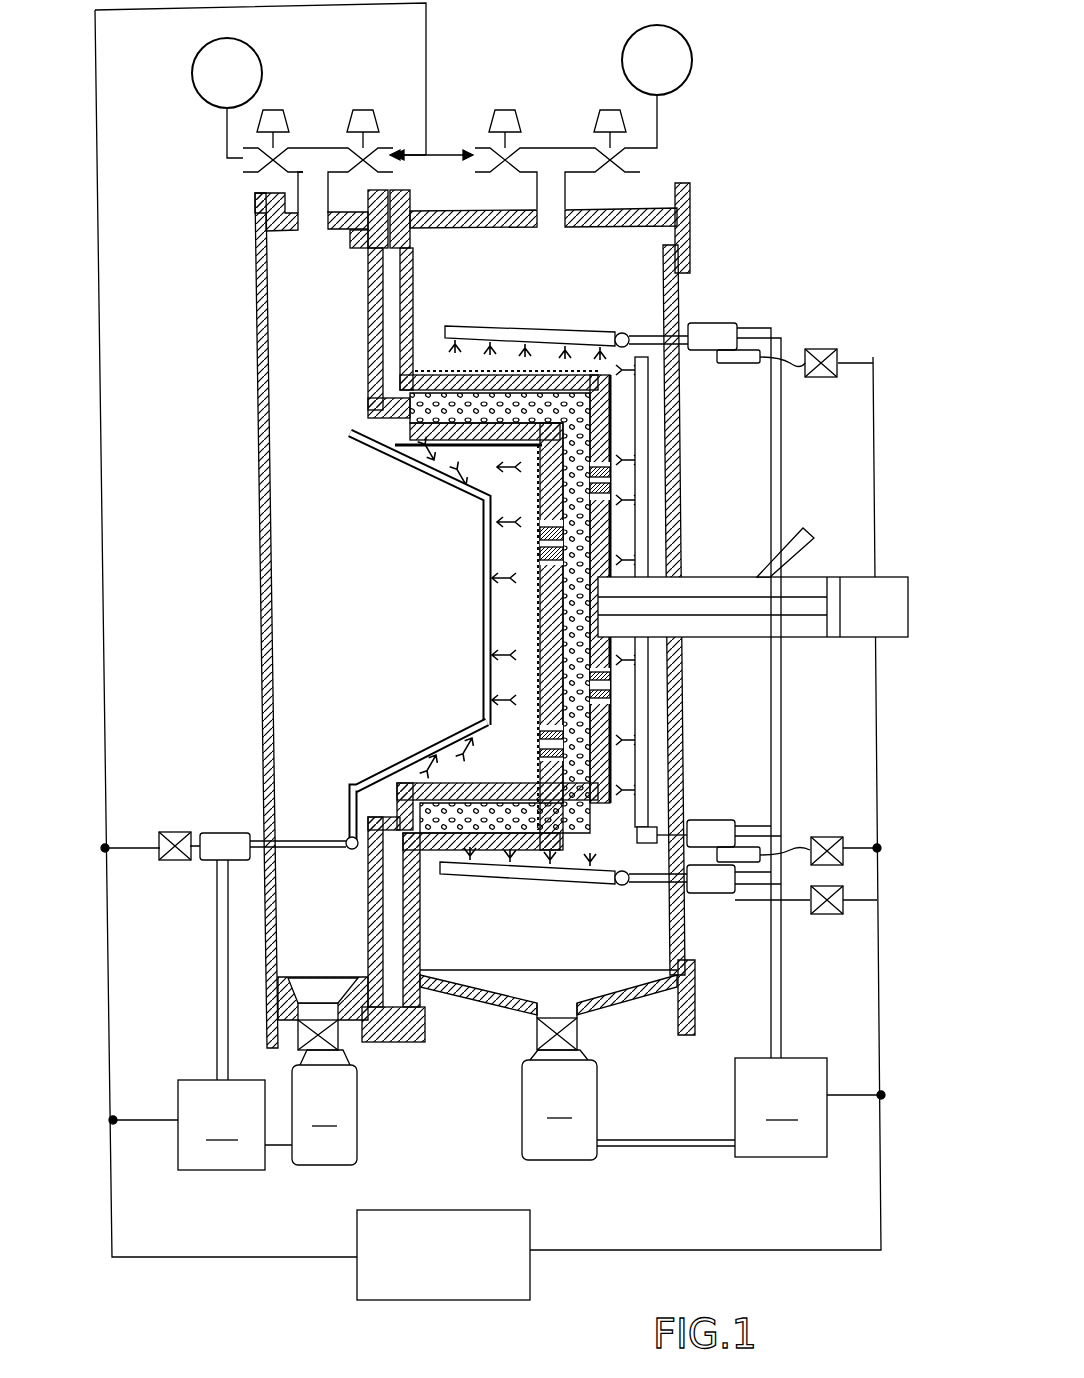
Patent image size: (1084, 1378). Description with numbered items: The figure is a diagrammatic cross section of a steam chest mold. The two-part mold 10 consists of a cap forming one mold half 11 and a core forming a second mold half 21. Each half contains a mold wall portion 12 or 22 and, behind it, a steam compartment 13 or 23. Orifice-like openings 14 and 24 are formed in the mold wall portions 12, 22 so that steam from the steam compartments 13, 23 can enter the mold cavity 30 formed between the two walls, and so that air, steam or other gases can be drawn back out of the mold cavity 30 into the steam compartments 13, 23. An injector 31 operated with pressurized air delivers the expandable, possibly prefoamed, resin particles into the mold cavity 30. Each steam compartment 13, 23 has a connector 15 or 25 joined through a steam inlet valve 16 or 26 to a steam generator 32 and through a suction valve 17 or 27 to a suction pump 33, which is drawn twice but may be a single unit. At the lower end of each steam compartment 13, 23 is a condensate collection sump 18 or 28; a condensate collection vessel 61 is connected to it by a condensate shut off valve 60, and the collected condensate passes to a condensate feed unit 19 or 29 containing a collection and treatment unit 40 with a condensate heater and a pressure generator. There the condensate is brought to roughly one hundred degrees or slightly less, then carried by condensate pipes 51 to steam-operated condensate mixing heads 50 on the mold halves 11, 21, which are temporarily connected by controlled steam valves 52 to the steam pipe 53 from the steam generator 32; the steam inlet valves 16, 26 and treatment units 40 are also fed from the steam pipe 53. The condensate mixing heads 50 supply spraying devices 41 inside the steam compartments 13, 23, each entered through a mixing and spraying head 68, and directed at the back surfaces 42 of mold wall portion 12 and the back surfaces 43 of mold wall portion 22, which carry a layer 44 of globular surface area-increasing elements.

The two-part mold 10 is at (832, 152).
The one mold half 11 is at (795, 292).
The mold wall portion 12 is at (545, 375).
The steam compartment 13 is at (620, 285).
The orifice-like openings 14 is at (605, 495).
The connector 15 is at (556, 207).
The steam inlet valve 16 is at (500, 150).
The suction valve 17 is at (598, 150).
The condensate collection sump 18 is at (580, 970).
The condensate feed unit 19 is at (805, 1040).
The second mold half 21 is at (218, 285).
The mold wall portion 22 is at (398, 468).
The steam compartment 23 is at (305, 528).
The orifice-like openings 24 is at (543, 530).
The connector 25 is at (308, 218).
The steam inlet valve 26 is at (368, 150).
The suction valve 27 is at (278, 150).
The condensate collection sump 28 is at (318, 978).
The condensate feed unit 29 is at (198, 1045).
The mold cavity 30 is at (540, 600).
The injector 31 is at (718, 577).
The steam generator 32 is at (532, 1240).
The suction pump 33 is at (194, 72).
The collection and treatment unit 40 is at (502, 1114).
The spraying device 41 is at (645, 400).
The back surface 42 is at (615, 790).
The back surface 43 is at (457, 452).
The layer 44 is at (465, 778).
The condensate mixing head 50 is at (715, 335).
The condensate pipe 51 is at (778, 450).
The controlled steam valve 52 is at (822, 350).
The steam pipe 53 is at (108, 752).
The condensate shut off valve 60 is at (340, 1038).
The condensate collection vessel 61 is at (444, 1107).
The mixing and spraying head 68 is at (580, 1035).